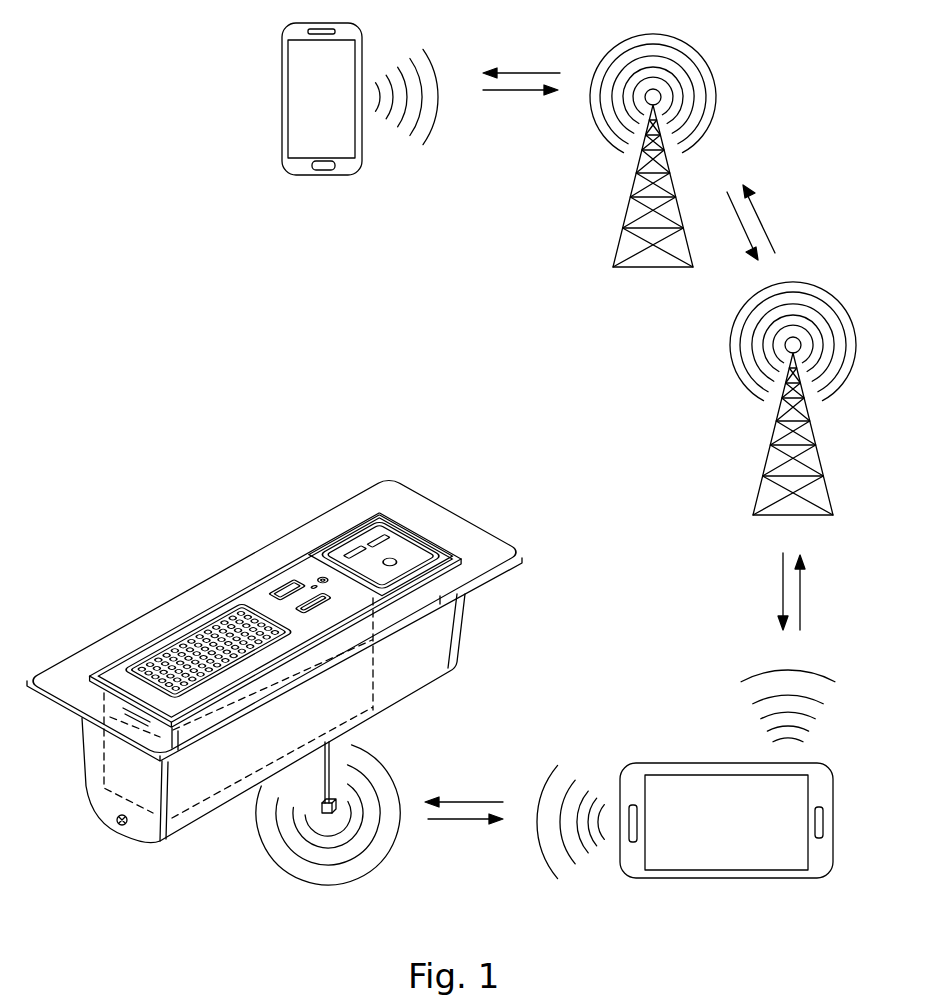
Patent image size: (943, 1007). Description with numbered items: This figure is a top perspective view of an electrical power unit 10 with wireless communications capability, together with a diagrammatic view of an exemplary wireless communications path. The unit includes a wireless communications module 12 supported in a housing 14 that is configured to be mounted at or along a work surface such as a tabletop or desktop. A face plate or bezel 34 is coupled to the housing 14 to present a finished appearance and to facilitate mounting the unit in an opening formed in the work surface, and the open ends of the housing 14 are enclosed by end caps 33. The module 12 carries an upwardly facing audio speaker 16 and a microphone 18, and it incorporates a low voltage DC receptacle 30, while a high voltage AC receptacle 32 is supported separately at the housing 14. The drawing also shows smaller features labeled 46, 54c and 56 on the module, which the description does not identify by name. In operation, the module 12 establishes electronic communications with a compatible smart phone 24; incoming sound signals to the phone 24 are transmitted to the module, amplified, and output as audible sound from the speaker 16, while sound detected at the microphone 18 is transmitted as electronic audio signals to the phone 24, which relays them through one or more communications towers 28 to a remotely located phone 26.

The electrical power unit 10 is at (413, 410).
The wireless communications module 12 is at (362, 688).
The housing 14 is at (447, 628).
The audio speaker 16 is at (190, 636).
The microphone 18 is at (331, 762).
The smart phone 24 is at (676, 768).
The remotely located phone 26 is at (282, 107).
The communications tower 28 is at (565, 222).
The low voltage DC receptacle 30 is at (322, 599).
The high voltage AC receptacle 32 is at (361, 546).
The end cap 33 is at (84, 765).
The face plate or bezel 34 is at (464, 527).
The speaker grille 46 is at (152, 648).
The button 54c is at (318, 576).
The USB port 56 is at (268, 585).